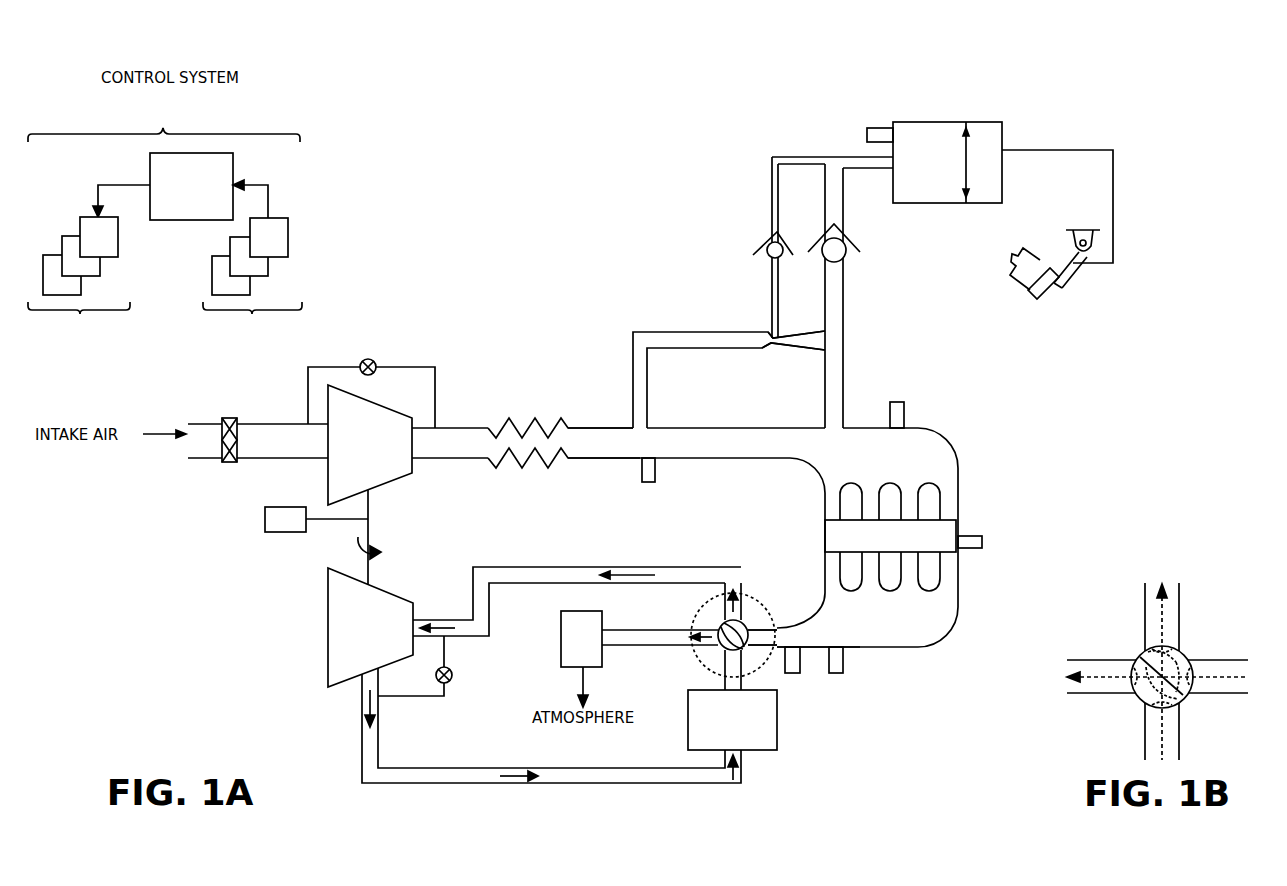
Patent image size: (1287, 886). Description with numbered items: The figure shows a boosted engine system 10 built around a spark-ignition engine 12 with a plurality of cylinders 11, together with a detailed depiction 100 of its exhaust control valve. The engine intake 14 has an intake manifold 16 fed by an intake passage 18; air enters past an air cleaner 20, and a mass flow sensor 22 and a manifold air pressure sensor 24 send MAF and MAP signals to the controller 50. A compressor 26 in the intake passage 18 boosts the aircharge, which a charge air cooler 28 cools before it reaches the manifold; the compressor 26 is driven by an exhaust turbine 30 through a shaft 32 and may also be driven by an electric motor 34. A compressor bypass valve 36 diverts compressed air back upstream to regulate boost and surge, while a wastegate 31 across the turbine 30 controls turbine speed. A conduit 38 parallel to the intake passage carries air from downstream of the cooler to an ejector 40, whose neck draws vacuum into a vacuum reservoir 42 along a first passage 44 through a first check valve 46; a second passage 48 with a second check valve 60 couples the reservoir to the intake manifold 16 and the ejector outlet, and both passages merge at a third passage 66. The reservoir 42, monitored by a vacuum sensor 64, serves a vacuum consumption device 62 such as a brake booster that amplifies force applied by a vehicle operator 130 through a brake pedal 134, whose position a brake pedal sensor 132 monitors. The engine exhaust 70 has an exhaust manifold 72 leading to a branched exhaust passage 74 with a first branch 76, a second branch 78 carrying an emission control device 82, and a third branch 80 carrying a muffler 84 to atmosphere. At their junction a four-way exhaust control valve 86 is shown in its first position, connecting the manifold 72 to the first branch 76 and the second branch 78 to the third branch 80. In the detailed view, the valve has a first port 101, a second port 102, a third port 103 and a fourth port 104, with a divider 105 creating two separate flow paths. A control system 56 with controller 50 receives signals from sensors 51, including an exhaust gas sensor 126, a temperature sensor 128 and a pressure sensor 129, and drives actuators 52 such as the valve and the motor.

In FIG. 1A, the engine system 10 is at (1148, 62).
In FIG. 1A, the cylinders 11 is at (880, 546).
In FIG. 1A, the engine 12 is at (903, 534).
In FIG. 1A, the engine intake 14 is at (472, 488).
In FIG. 1A, the intake manifold 16 is at (940, 453).
In FIG. 1A, the intake passage 18 is at (590, 427).
In FIG. 1A, the air cleaner 20 is at (231, 465).
In FIG. 1A, the mass flow sensor 22 is at (650, 484).
In FIG. 1A, the manifold air pressure sensor 24 is at (899, 402).
In FIG. 1A, the compressor 26 is at (360, 456).
In FIG. 1A, the charge air cooler 28 is at (531, 418).
In FIG. 1A, the exhaust turbine 30 is at (360, 636).
In FIG. 1A, the wastegate 31 is at (452, 671).
In FIG. 1A, the shaft 32 is at (368, 513).
In FIG. 1A, the electric motor 34 is at (275, 530).
In FIG. 1A, the compressor bypass valve 36 is at (374, 361).
In FIG. 1A, the conduit 38 is at (638, 331).
In FIG. 1A, the ejector 40 is at (772, 352).
In FIG. 1A, the vacuum reservoir 42 is at (947, 162).
In FIG. 1A, the first passage 44 is at (778, 211).
In FIG. 1A, the first check valve 46 is at (781, 242).
In FIG. 1A, the second passage 48 is at (846, 311).
In FIG. 1A, the controller 50 is at (181, 195).
In FIG. 1A, the sensors 51 is at (252, 315).
In FIG. 1A, the actuators 52 is at (80, 315).
In FIG. 1A, the control system 56 is at (164, 126).
In FIG. 1A, the second check valve 60 is at (847, 244).
In FIG. 1A, the vacuum consumption device 62 is at (975, 172).
In FIG. 1A, the vacuum sensor 64 is at (875, 127).
In FIG. 1A, the third passage 66 is at (796, 157).
In FIG. 1A, the engine exhaust 70 is at (838, 735).
In FIG. 1A, the exhaust manifold 72 is at (950, 621).
In FIG. 1A, the branched exhaust passage 74 is at (762, 628).
In FIG. 1A, the first branch 76 is at (668, 567).
In FIG. 1A, the second branch 78 is at (598, 768).
In FIG. 1A, the third branch 80 is at (648, 628).
In FIG. 1A, the emission control device 82 is at (722, 727).
In FIG. 1A, the muffler 84 is at (571, 647).
In FIG. 1A, the four-way exhaust control valve 86 is at (748, 628).
In FIG. 1A, the detailed depiction of the four-way control valve 100 is at (744, 625).
In FIG. 1B, the detailed depiction of the four-way control valve 100 is at (1168, 657).
In FIG. 1B, the first port 101 is at (1194, 669).
In FIG. 1B, the second port 102 is at (1175, 652).
In FIG. 1B, the third port 103 is at (1136, 692).
In FIG. 1B, the fourth port 104 is at (1176, 702).
In FIG. 1B, the divider 105 is at (1137, 661).
In FIG. 1A, the exhaust gas sensor 126 is at (841, 675).
In FIG. 1A, the temperature sensor 128 is at (977, 550).
In FIG. 1A, the pressure sensor 129 is at (797, 675).
In FIG. 1A, the vehicle operator 130 is at (1018, 291).
In FIG. 1A, the brake pedal sensor 132 is at (1075, 238).
In FIG. 1A, the brake pedal 134 is at (1062, 285).